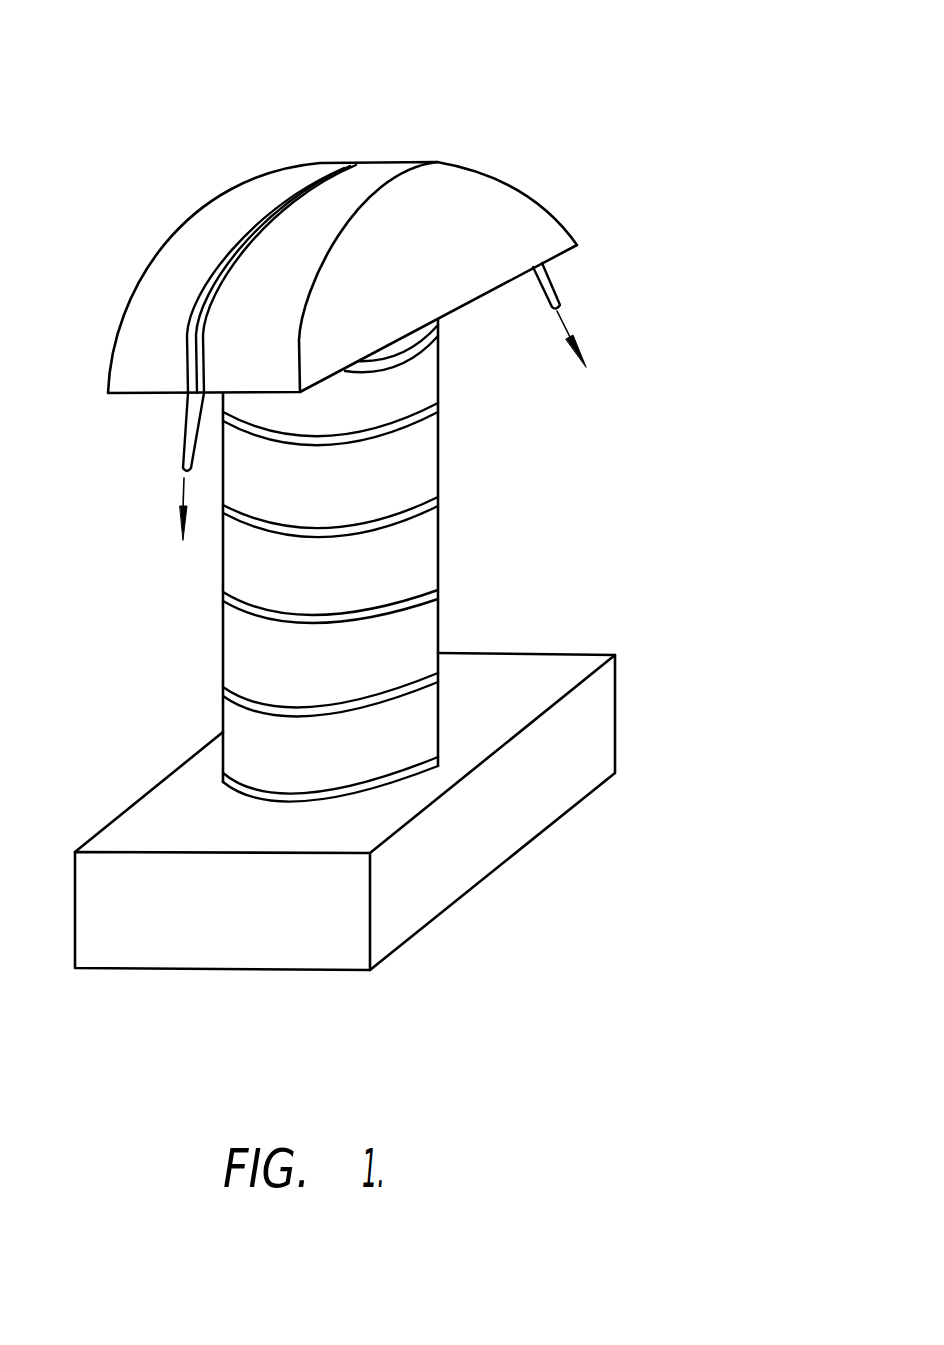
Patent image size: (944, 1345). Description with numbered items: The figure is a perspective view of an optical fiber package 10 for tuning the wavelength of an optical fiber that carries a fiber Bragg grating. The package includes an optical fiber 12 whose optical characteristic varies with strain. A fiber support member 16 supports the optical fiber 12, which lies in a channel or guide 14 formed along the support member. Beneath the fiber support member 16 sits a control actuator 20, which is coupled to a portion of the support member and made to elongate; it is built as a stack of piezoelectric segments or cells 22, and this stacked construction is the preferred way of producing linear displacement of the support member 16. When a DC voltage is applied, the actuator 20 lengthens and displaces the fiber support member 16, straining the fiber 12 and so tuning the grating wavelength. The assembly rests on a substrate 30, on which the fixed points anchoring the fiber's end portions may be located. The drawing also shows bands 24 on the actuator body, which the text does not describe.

The optical fiber package 10 is at (610, 75).
The optical fiber 12 is at (562, 290).
The channel or guide 14 is at (342, 165).
The fiber support member 16 is at (228, 222).
The control actuator 20 is at (455, 550).
The piezoelectric segments or cells 22 is at (439, 380).
The bands 24 is at (439, 498).
The substrate 30 is at (590, 727).